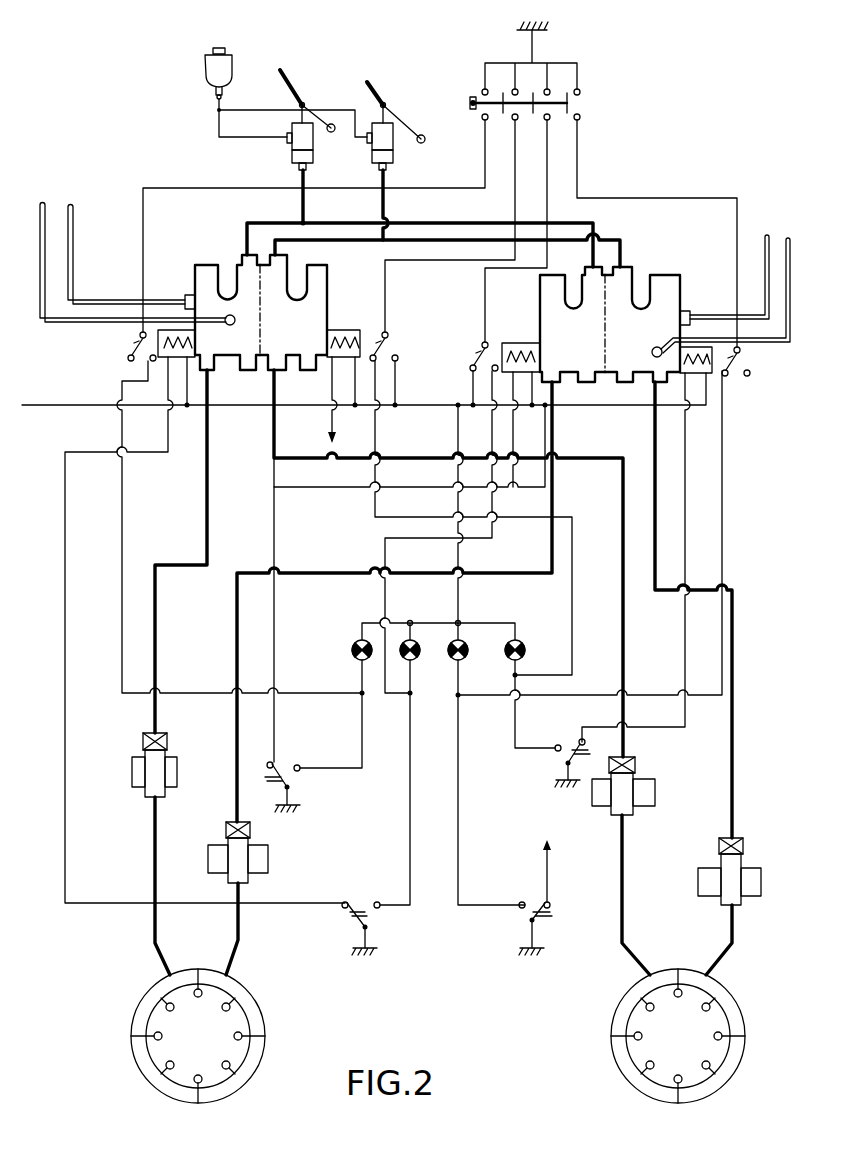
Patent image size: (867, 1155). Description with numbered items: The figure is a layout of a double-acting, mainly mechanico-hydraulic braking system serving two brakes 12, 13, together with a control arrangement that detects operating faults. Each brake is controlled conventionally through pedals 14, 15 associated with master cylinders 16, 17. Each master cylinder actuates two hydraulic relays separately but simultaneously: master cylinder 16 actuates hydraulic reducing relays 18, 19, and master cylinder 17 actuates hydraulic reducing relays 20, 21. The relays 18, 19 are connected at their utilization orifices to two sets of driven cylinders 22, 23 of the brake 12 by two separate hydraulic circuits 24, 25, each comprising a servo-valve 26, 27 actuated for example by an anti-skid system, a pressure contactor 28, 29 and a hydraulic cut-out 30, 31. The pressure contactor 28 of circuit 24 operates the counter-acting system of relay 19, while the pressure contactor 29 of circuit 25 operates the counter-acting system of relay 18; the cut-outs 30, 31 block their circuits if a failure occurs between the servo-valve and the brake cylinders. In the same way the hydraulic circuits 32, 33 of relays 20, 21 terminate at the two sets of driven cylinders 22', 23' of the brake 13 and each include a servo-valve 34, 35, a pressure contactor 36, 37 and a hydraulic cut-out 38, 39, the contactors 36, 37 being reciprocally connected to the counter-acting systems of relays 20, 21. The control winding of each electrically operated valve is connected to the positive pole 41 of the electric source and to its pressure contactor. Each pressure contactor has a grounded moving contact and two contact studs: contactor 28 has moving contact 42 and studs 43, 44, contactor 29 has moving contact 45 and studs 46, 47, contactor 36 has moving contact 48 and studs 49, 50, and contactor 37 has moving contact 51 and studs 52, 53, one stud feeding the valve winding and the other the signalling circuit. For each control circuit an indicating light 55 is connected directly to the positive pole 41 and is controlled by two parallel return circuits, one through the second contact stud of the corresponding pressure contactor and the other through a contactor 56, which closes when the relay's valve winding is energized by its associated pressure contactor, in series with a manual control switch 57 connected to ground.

The brake 12 is at (120, 1032).
The brake 13 is at (598, 1031).
The pedal 14 is at (297, 87).
The pedal 15 is at (384, 92).
The master cylinder 16 is at (292, 147).
The master cylinder 17 is at (372, 150).
The hydraulic reducing relay 18 is at (206, 276).
The hydraulic reducing relay 19 is at (556, 286).
The hydraulic reducing relay 20 is at (315, 281).
The hydraulic reducing relay 21 is at (666, 288).
The set of driven cylinders 22 is at (173, 1028).
The set of driven cylinders 22' is at (655, 1028).
The set of driven cylinders 23 is at (186, 1057).
The set of driven cylinders 23' is at (671, 1056).
The hydraulic circuit 24 is at (207, 532).
The hydraulic circuit 25 is at (552, 560).
The servo-valve 26 is at (138, 782).
The servo-valve 27 is at (208, 860).
The pressure contactor 28 is at (178, 773).
The pressure contactor 29 is at (262, 873).
The hydraulic cut-out 30 is at (168, 741).
The hydraulic cut-out 31 is at (250, 832).
The hydraulic circuit 32 is at (274, 452).
The hydraulic circuit 33 is at (655, 452).
The servo-valve 34 is at (596, 800).
The servo-valve 35 is at (698, 882).
The pressure contactor 36 is at (657, 795).
The pressure contactor 37 is at (752, 880).
The hydraulic cut-out 38 is at (636, 767).
The hydraulic cut-out 39 is at (718, 846).
The positive pole 41 is at (363, 399).
The moving contact 42 is at (283, 790).
The contact stud 43 is at (270, 762).
The contact stud 44 is at (300, 766).
The moving contact 45 is at (360, 925).
The contact stud 46 is at (344, 903).
The contact stud 47 is at (378, 902).
The moving contact 48 is at (566, 765).
The contact stud 49 is at (555, 748).
The contact stud 50 is at (586, 739).
The moving contact 51 is at (528, 918).
The contact stud 52 is at (520, 905).
The contact stud 53 is at (550, 905).
The indicating light 55 is at (352, 650).
The contactor 56 is at (128, 344).
The manual control switch 57 is at (473, 97).